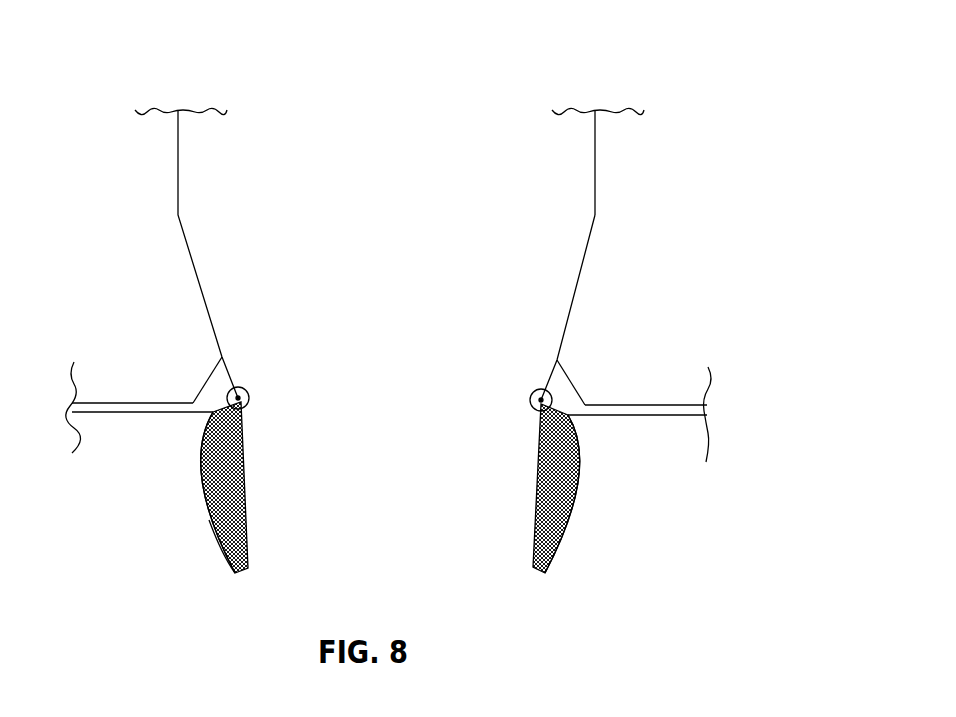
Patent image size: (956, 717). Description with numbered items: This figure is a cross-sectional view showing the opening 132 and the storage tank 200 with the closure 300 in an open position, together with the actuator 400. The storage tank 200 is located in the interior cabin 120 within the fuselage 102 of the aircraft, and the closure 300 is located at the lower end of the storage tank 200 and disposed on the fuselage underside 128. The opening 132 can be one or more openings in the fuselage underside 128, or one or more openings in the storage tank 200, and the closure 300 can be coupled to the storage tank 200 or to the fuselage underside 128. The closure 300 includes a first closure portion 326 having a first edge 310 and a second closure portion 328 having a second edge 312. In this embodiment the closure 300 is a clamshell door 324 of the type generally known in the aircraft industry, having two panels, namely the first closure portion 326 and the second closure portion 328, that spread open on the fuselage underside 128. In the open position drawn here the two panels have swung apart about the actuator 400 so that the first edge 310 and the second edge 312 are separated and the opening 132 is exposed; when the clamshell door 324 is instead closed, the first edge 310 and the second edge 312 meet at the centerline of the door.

The fuselage 102 is at (657, 412).
The interior cabin 120 is at (658, 162).
The fuselage underside 128 is at (117, 423).
The opening 132 is at (375, 416).
The storage tank 200 is at (521, 111).
The closure 300 is at (594, 438).
The first edge 310 is at (247, 570).
The second edge 312 is at (535, 572).
The clamshell door 324 is at (189, 489).
The first closure portion 326 is at (209, 520).
The second closure portion 328 is at (578, 500).
The actuator 400 is at (530, 388).